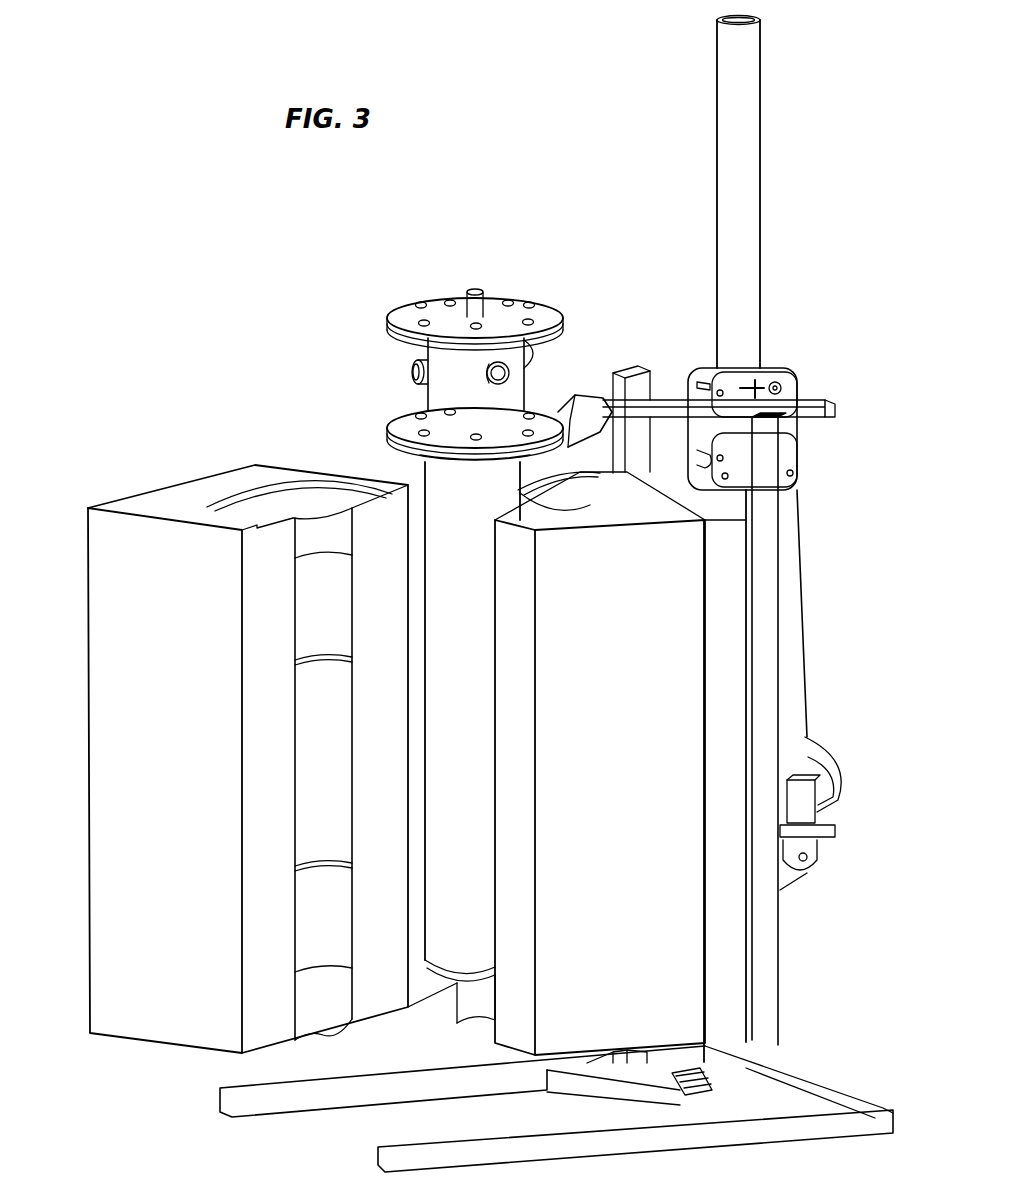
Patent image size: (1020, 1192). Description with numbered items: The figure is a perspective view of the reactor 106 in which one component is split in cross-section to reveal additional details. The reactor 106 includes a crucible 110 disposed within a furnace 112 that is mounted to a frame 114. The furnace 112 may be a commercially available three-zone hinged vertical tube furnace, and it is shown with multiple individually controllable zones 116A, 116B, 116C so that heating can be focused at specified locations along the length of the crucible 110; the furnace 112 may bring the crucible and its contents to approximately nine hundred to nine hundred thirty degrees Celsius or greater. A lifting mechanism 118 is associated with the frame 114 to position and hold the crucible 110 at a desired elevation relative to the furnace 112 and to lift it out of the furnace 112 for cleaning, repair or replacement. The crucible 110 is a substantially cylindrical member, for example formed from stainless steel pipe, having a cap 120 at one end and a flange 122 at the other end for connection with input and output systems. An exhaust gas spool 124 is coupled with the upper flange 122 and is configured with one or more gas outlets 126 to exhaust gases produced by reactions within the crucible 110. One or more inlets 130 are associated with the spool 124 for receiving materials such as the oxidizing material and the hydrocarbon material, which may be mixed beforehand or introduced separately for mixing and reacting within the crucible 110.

The reactor 106 is at (160, 212).
The crucible 110 is at (430, 458).
The furnace 112 is at (187, 483).
The frame 114 is at (760, 228).
The zone 116A is at (320, 612).
The zone 116B is at (325, 770).
The zone 116C is at (320, 920).
The lifting mechanism 118 is at (829, 378).
The cap 120 is at (455, 985).
The flange 122 is at (395, 432).
The exhaust gas spool 124 is at (548, 381).
The gas outlet 126 is at (414, 353).
The inlet 130 is at (478, 289).